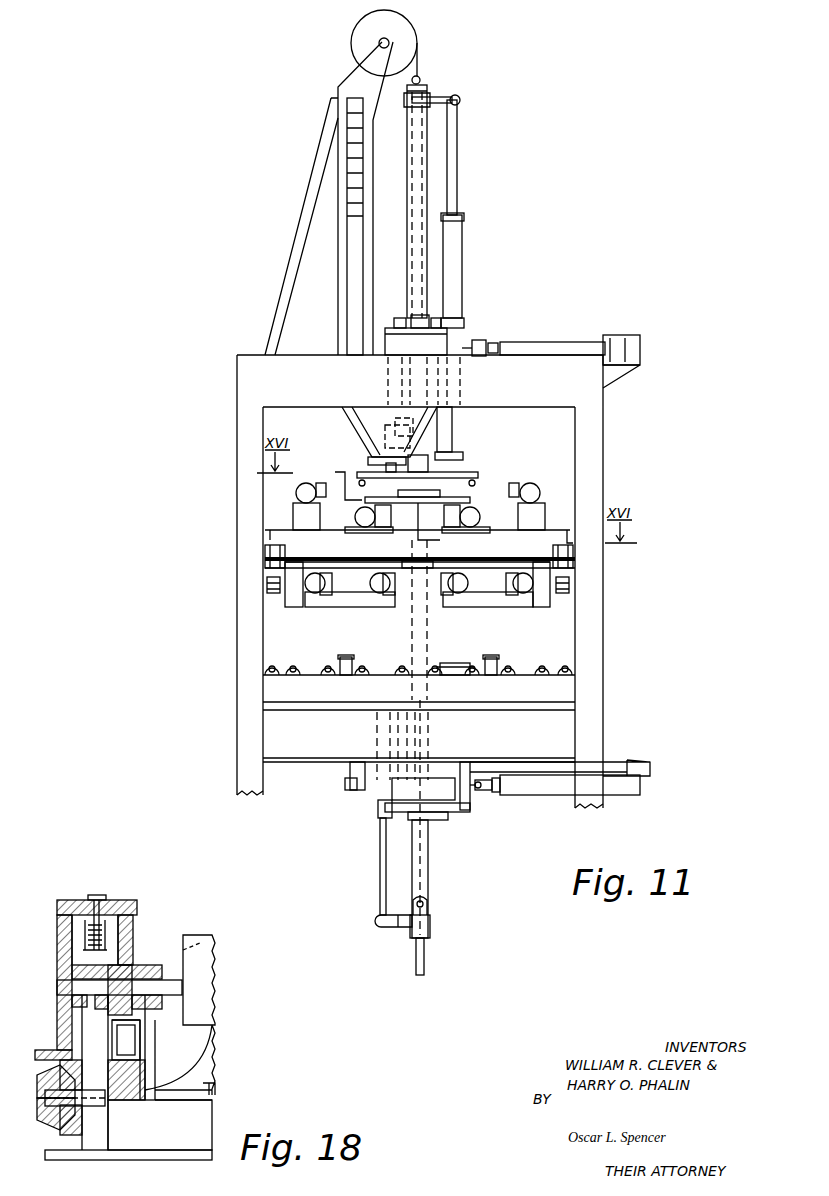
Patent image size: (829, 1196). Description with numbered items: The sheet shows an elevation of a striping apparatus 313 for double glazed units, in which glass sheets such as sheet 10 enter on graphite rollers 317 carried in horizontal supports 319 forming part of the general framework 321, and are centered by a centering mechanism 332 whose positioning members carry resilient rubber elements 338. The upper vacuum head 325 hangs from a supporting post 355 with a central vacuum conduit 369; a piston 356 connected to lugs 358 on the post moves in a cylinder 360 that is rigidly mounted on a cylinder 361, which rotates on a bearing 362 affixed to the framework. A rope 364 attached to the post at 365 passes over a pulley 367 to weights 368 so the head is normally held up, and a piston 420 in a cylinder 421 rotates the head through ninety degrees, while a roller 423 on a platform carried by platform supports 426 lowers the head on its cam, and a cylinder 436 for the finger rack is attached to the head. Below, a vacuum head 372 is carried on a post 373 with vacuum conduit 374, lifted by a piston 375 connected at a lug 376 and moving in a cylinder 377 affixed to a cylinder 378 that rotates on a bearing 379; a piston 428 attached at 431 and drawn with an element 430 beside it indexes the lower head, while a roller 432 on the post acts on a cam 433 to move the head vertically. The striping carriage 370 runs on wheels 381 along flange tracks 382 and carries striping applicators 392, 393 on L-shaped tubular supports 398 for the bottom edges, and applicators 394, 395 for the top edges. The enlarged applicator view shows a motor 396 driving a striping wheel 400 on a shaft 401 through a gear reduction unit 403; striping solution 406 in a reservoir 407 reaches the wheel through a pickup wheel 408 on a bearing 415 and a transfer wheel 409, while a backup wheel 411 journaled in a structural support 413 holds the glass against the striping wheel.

In FIG. 11, the striping apparatus 313 is at (596, 455).
In FIG. 11, the general framework 321 is at (240, 390).
In FIG. 11, the weights 368 is at (352, 186).
In FIG. 11, the pulley 367 is at (406, 18).
In FIG. 11, the rope 364 is at (419, 66).
In FIG. 11, the rope attachment point 365 is at (421, 80).
In FIG. 11, the supporting post 355 is at (408, 234).
In FIG. 11, the vacuum conduit 369 is at (412, 166).
In FIG. 11, the lugs 358 is at (448, 100).
In FIG. 11, the piston 356 is at (458, 153).
In FIG. 11, the cylinder 360 is at (463, 272).
In FIG. 11, the cylinder 361 is at (394, 336).
In FIG. 11, the bearing 362 is at (388, 375).
In FIG. 11, the piston 420 is at (494, 340).
In FIG. 11, the cylinder 421 is at (570, 342).
In FIG. 11, the platform supports 426 is at (352, 423).
In FIG. 11, the roller 423 is at (383, 467).
In FIG. 11, the cylinder 436 is at (470, 472).
In FIG. 11, the vacuum head 325 is at (462, 498).
In FIG. 11, the striping applicators 394 is at (296, 505).
In FIG. 18, the striping applicators 394 is at (230, 1102).
In FIG. 11, the striping applicators 395 is at (400, 510).
In FIG. 11, the striping carriage 370 is at (556, 525).
In FIG. 11, the wheels 381 is at (265, 552).
In FIG. 11, the flange tracks 382 is at (265, 585).
In FIG. 11, the striping applicators 392 is at (315, 594).
In FIG. 11, the striping applicators 393 is at (452, 590).
In FIG. 11, the L-shaped tubular supports 398 is at (362, 598).
In FIG. 11, the graphite rollers 317 is at (285, 665).
In FIG. 11, the horizontal supports 319 is at (325, 667).
In FIG. 11, the centering mechanism 332 is at (352, 658).
In FIG. 11, the vacuum head 372 is at (423, 670).
In FIG. 11, the resilient cylindrical rubber elements 338 is at (482, 658).
In FIG. 11, the bearing 379 is at (390, 723).
In FIG. 11, the cylinder 378 is at (388, 790).
In FIG. 11, the cylinder 377 is at (376, 812).
In FIG. 11, the piston 428 is at (488, 792).
In FIG. 11, the piston attachment point 431 is at (476, 790).
In FIG. 11, the cylinder 430 is at (533, 786).
In FIG. 11, the cam 433 is at (436, 820).
In FIG. 11, the piston 375 is at (380, 858).
In FIG. 11, the post 373 is at (428, 894).
In FIG. 11, the vacuum conduit 374 is at (428, 875).
In FIG. 11, the roller 432 is at (428, 905).
In FIG. 11, the lug 376 is at (395, 925).
In FIG. 18, the transfer wheel 409 is at (122, 900).
In FIG. 18, the pickup wheel 408 is at (133, 930).
In FIG. 18, the bearing 415 is at (125, 965).
In FIG. 18, the gear reduction unit 403 is at (212, 974).
In FIG. 18, the shaft 401 is at (62, 984).
In FIG. 18, the striping wheel 400 is at (70, 1003).
In FIG. 18, the glass sheet 10 is at (50, 1050).
In FIG. 18, the reservoir 407 is at (142, 1038).
In FIG. 18, the striping solution 406 is at (146, 1068).
In FIG. 18, the motor 396 is at (212, 1062).
In FIG. 18, the structural support 413 is at (108, 1130).
In FIG. 18, the backup wheel 411 is at (50, 1138).